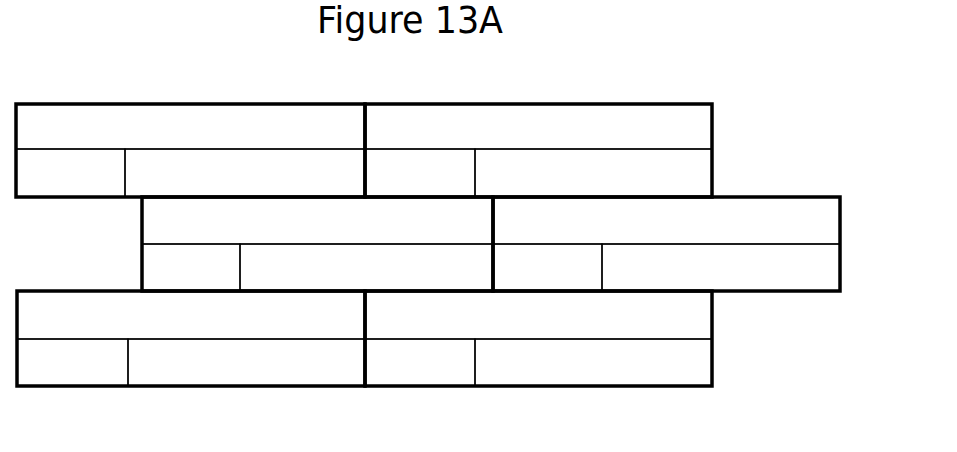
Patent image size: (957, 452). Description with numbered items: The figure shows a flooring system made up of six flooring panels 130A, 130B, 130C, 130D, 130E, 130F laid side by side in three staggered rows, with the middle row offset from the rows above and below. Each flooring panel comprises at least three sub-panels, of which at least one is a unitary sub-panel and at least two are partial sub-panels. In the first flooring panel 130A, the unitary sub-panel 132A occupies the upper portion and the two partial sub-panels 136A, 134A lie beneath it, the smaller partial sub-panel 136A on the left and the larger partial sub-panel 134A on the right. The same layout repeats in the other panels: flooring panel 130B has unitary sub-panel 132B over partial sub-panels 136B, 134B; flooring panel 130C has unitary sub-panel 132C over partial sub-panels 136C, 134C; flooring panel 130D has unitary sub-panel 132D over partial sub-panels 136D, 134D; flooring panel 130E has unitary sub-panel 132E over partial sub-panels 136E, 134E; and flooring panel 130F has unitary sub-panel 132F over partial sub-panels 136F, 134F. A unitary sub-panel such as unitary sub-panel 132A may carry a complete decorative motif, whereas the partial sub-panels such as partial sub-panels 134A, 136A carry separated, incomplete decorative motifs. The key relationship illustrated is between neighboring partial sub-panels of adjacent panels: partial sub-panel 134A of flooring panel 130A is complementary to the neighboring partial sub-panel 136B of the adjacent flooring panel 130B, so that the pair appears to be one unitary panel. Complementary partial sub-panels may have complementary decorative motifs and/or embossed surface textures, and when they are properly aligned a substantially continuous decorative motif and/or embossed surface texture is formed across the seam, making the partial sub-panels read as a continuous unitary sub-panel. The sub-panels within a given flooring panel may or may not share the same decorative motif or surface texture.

The flooring panel 130A is at (190, 126).
The unitary sub-panel 132A is at (190, 126).
The partial sub-panel 136A is at (70, 173).
The partial sub-panel 134A is at (245, 173).
The flooring panel 130B is at (538, 124).
The unitary sub-panel 132B is at (538, 126).
The partial sub-panel 136B is at (420, 173).
The partial sub-panel 134B is at (593, 173).
The flooring panel 130C is at (279, 244).
The unitary sub-panel 132C is at (317, 220).
The partial sub-panel 136C is at (191, 267).
The partial sub-panel 134C is at (366, 267).
The flooring panel 130D is at (666, 217).
The unitary sub-panel 132D is at (666, 220).
The partial sub-panel 136D is at (547, 267).
The partial sub-panel 134D is at (721, 267).
The flooring panel 130E is at (191, 358).
The unitary sub-panel 132E is at (191, 315).
The partial sub-panel 136E is at (72, 362).
The partial sub-panel 134E is at (246, 362).
The flooring panel 130F is at (538, 364).
The unitary sub-panel 132F is at (538, 315).
The partial sub-panel 136F is at (420, 362).
The partial sub-panel 134F is at (593, 362).